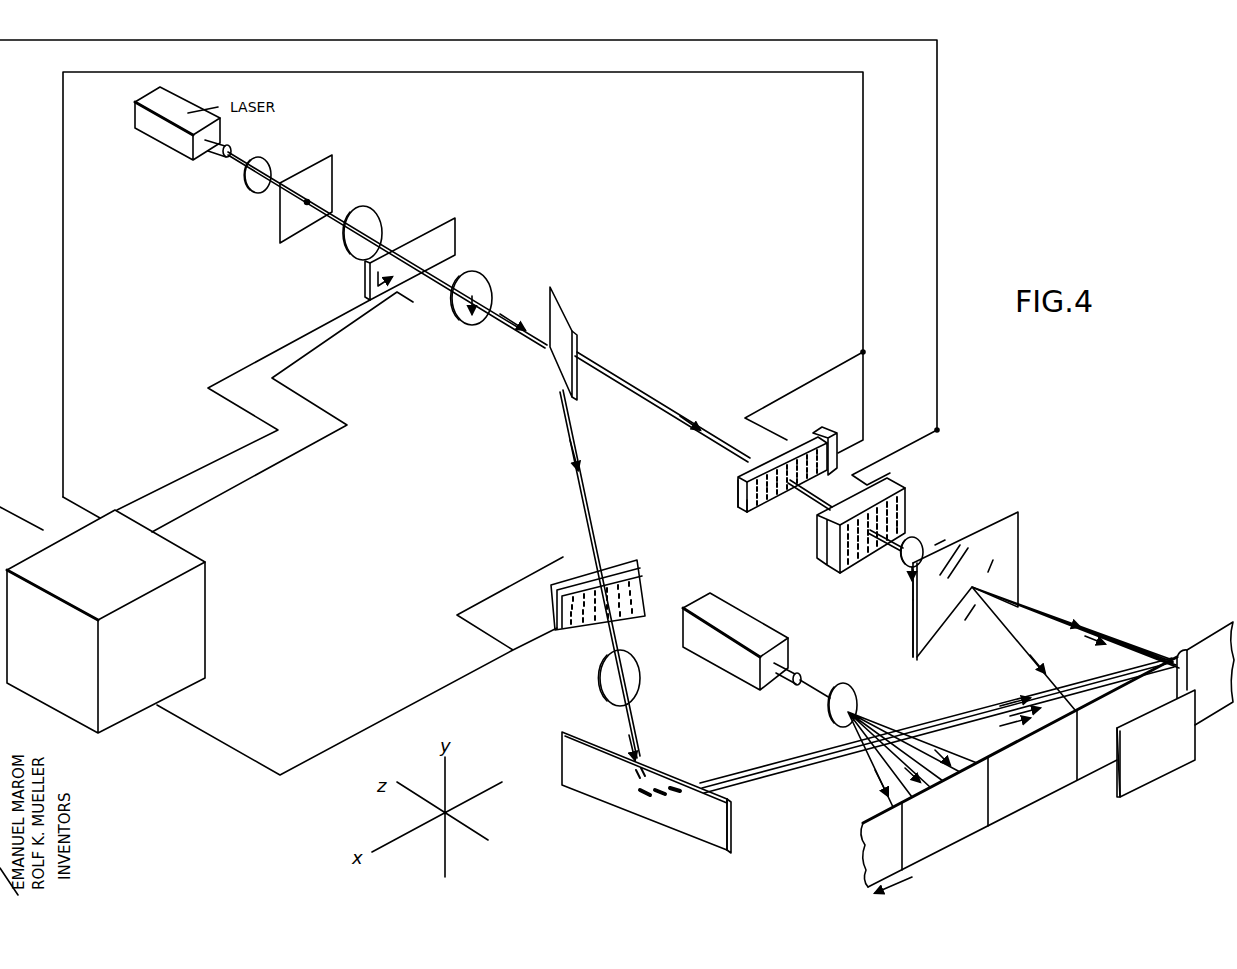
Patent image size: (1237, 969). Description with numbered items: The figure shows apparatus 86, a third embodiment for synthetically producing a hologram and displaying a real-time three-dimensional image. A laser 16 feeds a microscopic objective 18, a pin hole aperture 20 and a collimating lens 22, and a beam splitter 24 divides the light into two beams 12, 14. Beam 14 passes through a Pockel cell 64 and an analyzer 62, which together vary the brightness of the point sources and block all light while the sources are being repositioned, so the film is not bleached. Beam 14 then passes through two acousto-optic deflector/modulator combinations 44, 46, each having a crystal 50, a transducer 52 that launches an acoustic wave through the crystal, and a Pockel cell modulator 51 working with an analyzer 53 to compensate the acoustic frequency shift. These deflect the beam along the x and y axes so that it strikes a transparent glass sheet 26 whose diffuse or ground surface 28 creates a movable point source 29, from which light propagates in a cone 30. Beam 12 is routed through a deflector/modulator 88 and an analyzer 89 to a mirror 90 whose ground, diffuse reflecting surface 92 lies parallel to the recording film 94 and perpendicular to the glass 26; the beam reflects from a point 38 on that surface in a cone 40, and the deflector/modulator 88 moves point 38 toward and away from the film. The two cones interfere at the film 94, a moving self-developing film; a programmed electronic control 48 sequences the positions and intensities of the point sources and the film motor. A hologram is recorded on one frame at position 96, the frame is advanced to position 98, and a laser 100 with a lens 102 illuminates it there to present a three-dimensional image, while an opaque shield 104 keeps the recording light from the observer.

The laser beam 12 is at (580, 438).
The laser beam 14 is at (617, 383).
The laser 16 is at (185, 150).
The microscopic objective 18 is at (273, 167).
The pin hole aperture 20 is at (312, 173).
The collimating lens 22 is at (373, 223).
The beam splitter 24 is at (566, 304).
The transparent glass sheet 26 is at (917, 584).
The diffuse or ground surface 28 is at (1013, 558).
The point source 29 is at (917, 601).
The cone of light 30 is at (1067, 633).
The point source 38 is at (640, 797).
The cone of light 40 is at (840, 768).
The acousto-optic deflector/modulator 44 is at (797, 447).
The acousto-optic deflector/modulator 46 is at (887, 489).
The programmed electronic control 48 is at (207, 573).
The crystal 50 is at (754, 515).
The Pockel cell modulator 51 is at (737, 490).
The transducer 52 is at (831, 438).
The analyzer 53 is at (915, 557).
The analyzer 62 is at (483, 286).
The Pockel cell 64 is at (447, 240).
The apparatus for synthetically producing a hologram 86 is at (694, 236).
The deflector/modulator 88 is at (628, 573).
The analyzer 89 is at (643, 681).
The mirror 90 is at (666, 776).
The diffuse reflecting surface 92 is at (733, 819).
The recording film 94 is at (1026, 757).
The recording position 96 is at (1090, 764).
The viewing position 98 is at (948, 832).
The laser 100 is at (750, 632).
The lens 102 is at (853, 698).
The opaque shield 104 is at (1137, 780).